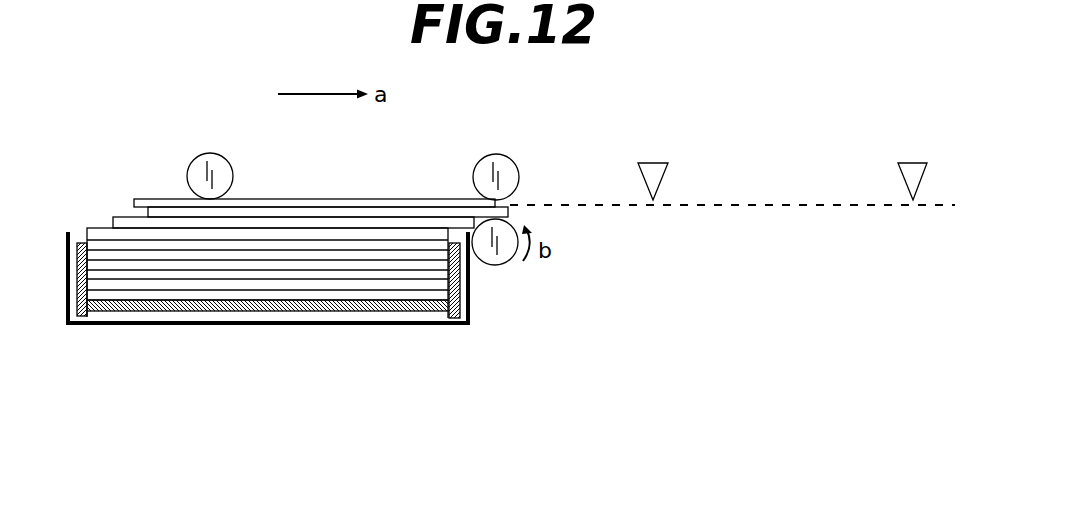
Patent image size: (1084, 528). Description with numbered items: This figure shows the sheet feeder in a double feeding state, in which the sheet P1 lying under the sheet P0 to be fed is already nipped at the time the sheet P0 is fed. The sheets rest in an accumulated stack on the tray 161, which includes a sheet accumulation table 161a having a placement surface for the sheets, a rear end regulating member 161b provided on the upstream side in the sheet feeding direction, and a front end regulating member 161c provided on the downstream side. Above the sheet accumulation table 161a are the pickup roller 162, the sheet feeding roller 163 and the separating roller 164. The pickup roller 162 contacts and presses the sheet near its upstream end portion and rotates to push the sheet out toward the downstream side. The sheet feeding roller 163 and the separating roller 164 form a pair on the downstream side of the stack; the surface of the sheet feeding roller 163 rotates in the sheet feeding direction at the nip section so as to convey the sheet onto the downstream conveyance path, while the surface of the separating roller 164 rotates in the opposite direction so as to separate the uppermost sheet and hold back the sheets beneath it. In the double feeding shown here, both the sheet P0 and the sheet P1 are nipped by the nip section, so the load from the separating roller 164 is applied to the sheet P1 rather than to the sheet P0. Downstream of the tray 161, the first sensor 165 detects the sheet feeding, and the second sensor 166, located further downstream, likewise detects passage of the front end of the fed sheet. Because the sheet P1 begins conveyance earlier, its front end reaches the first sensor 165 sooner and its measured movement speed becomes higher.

The tray 161 is at (345, 343).
The sheet accumulation table 161a is at (247, 327).
The rear end regulating member 161b is at (83, 318).
The front end regulating member 161c is at (452, 317).
The pickup roller 162 is at (213, 160).
The sheet feeding roller 163 is at (510, 168).
The separating roller 164 is at (502, 257).
The first sensor 165 is at (656, 172).
The second sensor 166 is at (914, 172).
The sheet to be fed P0 is at (305, 207).
The sheet accumulated under the sheet to be fed P1 is at (378, 210).